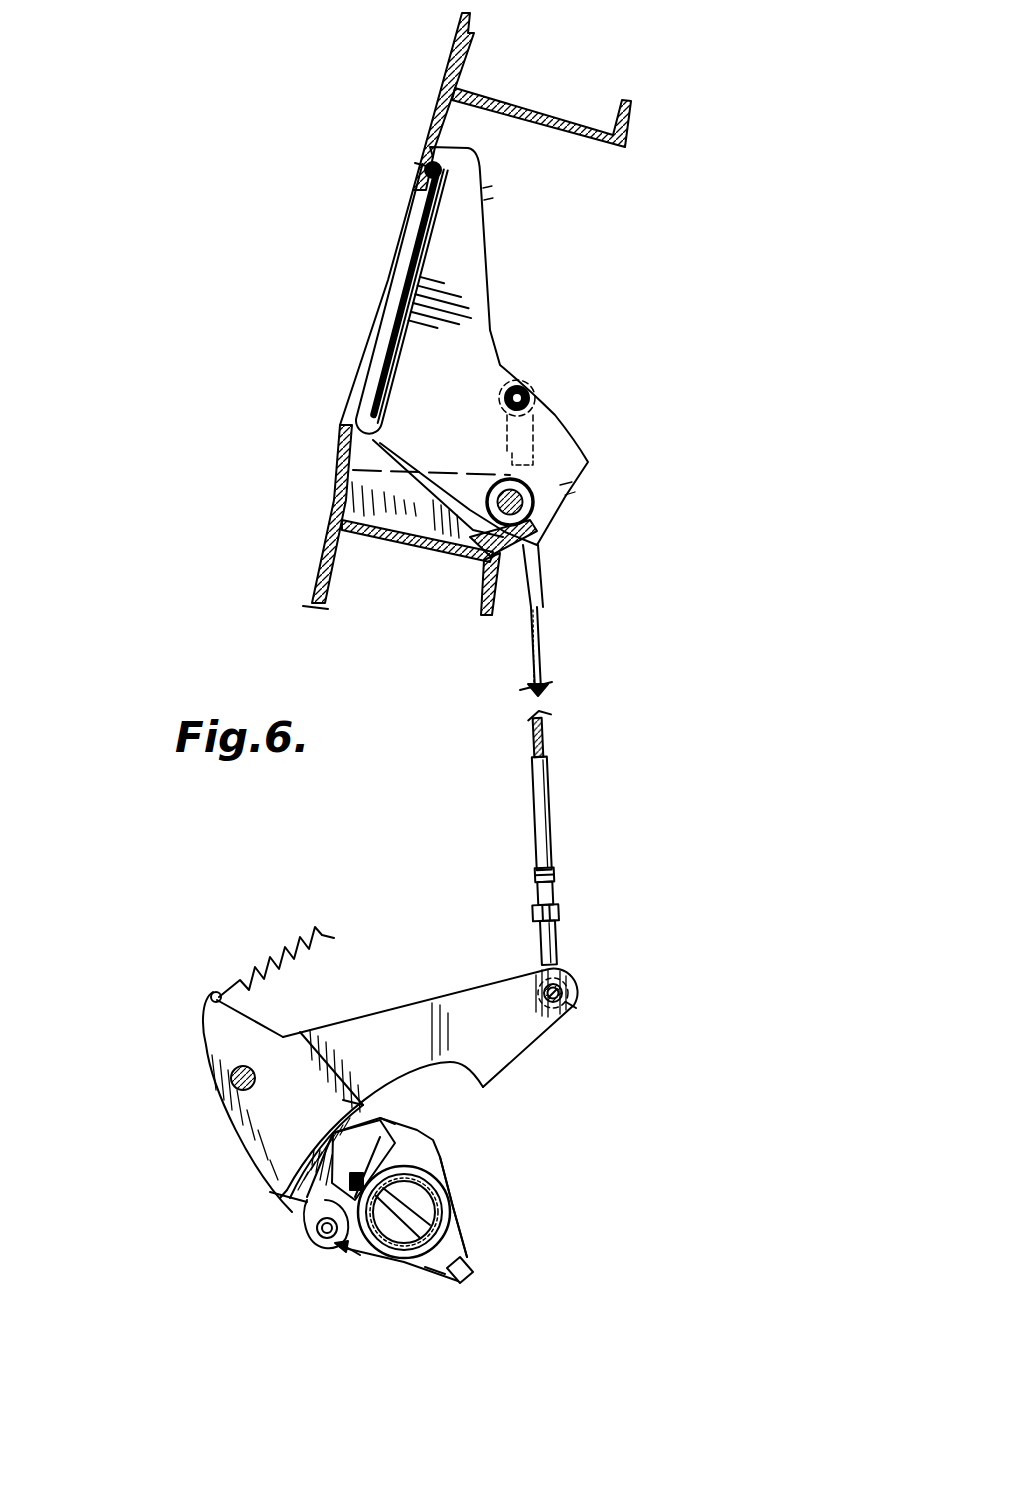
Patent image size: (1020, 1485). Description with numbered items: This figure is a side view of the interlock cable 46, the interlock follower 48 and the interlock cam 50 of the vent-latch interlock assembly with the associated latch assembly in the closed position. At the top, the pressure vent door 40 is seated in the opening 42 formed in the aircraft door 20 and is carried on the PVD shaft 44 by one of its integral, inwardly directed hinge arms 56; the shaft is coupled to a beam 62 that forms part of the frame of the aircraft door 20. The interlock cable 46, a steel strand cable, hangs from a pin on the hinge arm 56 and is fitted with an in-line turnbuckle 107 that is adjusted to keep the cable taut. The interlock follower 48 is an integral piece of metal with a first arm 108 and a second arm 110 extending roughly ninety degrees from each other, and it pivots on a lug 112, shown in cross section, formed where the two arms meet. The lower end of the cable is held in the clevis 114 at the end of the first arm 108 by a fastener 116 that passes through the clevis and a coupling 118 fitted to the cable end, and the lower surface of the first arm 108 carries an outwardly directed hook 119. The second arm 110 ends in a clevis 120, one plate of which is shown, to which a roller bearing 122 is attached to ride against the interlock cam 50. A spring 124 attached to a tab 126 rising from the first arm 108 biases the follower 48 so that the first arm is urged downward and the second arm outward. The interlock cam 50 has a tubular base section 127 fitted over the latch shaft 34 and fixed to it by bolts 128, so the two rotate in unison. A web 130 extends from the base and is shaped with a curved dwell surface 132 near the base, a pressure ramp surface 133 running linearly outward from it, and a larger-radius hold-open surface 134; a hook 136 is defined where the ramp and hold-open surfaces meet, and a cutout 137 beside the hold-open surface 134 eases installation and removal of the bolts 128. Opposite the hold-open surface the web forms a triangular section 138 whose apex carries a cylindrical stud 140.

The aircraft door 20 is at (335, 488).
The pressure vent door 40 is at (368, 316).
The opening 42 is at (352, 413).
The PVD shaft 44 is at (523, 503).
The interlock cable 46 is at (540, 732).
The hinge arms 56 is at (478, 275).
The beam 62 is at (438, 552).
The turnbuckle 107 is at (555, 873).
The coupling 118 is at (558, 937).
The clevis 114 is at (573, 983).
The fastener 116 is at (573, 1010).
The first arm 108 is at (517, 1040).
The hook 119 is at (481, 1086).
The cutout 137 is at (392, 1130).
The web 130 is at (427, 1162).
The tubular base section 127 is at (450, 1222).
The bolts 128 is at (395, 1262).
The latch shaft 34 is at (408, 1230).
The interlock cam 50 is at (480, 1250).
The stud 140 is at (473, 1280).
The triangular section 138 is at (437, 1270).
The dwell surface 132 is at (352, 1256).
The roller bearing 122 is at (340, 1257).
The clevis 120 is at (317, 1233).
The pressure ramp surface 133 is at (306, 1226).
The hook 136 is at (290, 1207).
The second arm 110 is at (237, 1120).
The lug 112 is at (233, 1079).
The tab 126 is at (213, 1023).
The spring 124 is at (330, 937).
The hold-open surface 134 is at (335, 1132).
The interlock follower 48 is at (464, 1052).